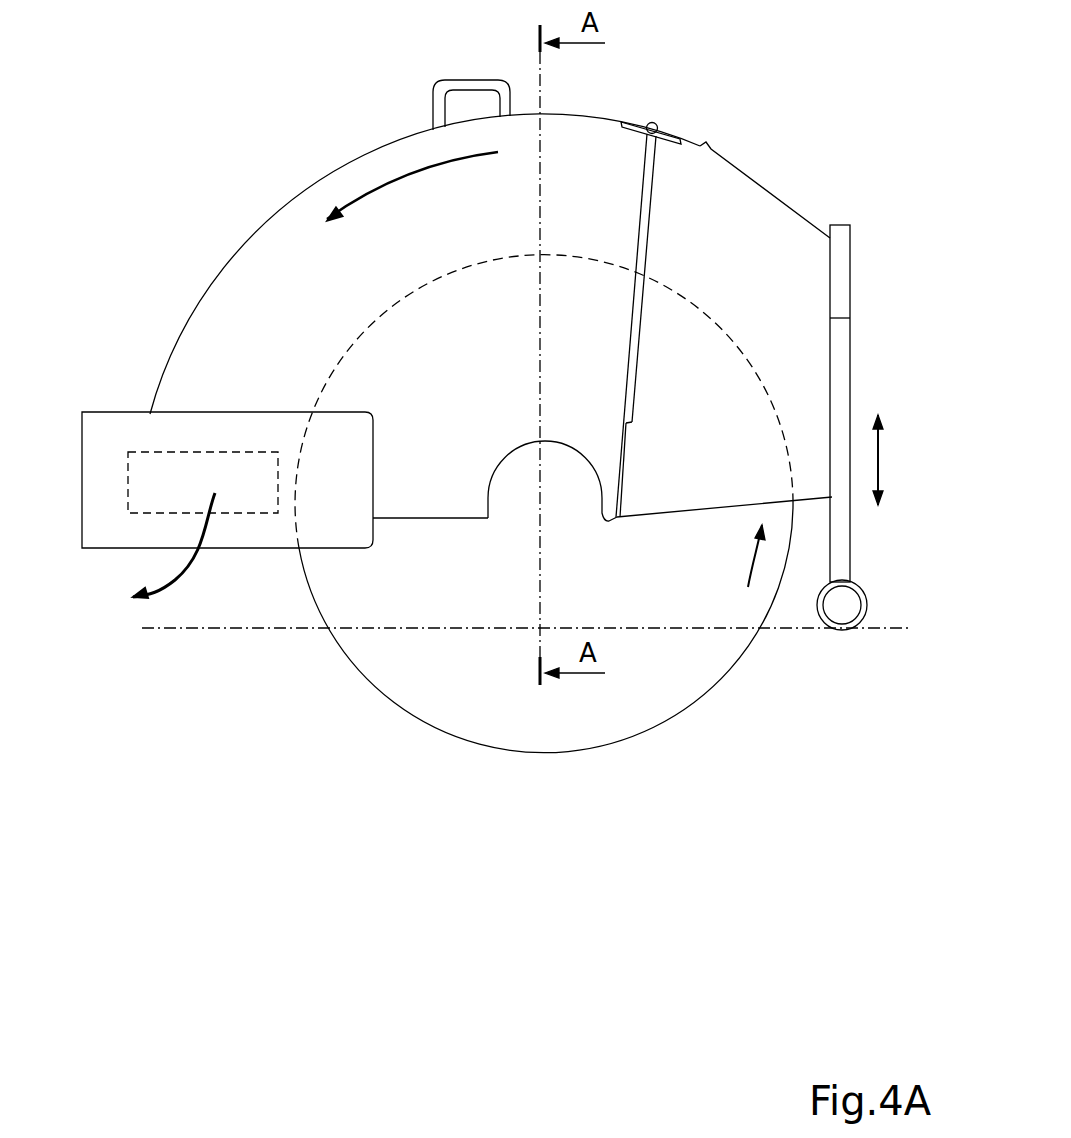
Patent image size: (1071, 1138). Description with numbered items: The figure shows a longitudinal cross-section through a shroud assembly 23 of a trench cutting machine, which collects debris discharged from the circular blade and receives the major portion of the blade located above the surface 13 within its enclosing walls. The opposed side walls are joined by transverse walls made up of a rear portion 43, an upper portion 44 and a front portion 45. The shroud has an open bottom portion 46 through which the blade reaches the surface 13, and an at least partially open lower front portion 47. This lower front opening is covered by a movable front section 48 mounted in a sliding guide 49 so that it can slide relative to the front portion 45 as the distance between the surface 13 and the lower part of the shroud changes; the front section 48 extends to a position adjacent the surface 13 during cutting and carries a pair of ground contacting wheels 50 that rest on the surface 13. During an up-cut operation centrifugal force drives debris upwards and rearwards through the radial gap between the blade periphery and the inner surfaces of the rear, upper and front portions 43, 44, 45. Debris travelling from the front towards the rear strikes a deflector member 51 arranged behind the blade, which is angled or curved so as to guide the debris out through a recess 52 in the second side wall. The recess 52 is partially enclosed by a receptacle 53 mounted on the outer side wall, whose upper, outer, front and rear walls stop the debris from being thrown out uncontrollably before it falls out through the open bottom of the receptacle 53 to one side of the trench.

The surface 13 is at (242, 627).
The shroud assembly 23 is at (305, 243).
The rear portion 43 is at (207, 317).
The upper portion 44 is at (612, 124).
The front portion 45 is at (790, 197).
The open bottom portion 46 is at (472, 570).
The partially open lower front portion 47 is at (808, 535).
The movable front section 48 is at (865, 350).
The sliding guide 49 is at (830, 318).
The ground contacting wheels 50 is at (853, 607).
The deflector member 51 is at (158, 495).
The recess 52 is at (167, 470).
The receptacle 53 is at (102, 443).